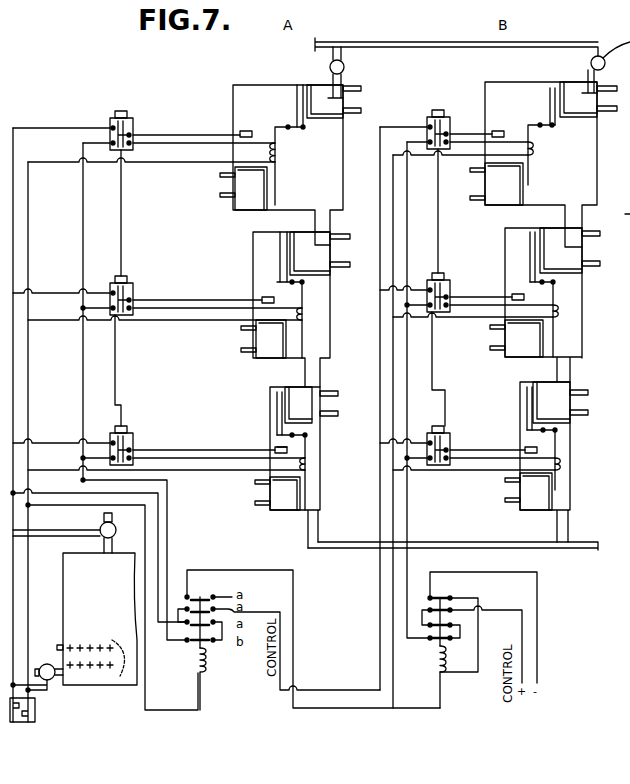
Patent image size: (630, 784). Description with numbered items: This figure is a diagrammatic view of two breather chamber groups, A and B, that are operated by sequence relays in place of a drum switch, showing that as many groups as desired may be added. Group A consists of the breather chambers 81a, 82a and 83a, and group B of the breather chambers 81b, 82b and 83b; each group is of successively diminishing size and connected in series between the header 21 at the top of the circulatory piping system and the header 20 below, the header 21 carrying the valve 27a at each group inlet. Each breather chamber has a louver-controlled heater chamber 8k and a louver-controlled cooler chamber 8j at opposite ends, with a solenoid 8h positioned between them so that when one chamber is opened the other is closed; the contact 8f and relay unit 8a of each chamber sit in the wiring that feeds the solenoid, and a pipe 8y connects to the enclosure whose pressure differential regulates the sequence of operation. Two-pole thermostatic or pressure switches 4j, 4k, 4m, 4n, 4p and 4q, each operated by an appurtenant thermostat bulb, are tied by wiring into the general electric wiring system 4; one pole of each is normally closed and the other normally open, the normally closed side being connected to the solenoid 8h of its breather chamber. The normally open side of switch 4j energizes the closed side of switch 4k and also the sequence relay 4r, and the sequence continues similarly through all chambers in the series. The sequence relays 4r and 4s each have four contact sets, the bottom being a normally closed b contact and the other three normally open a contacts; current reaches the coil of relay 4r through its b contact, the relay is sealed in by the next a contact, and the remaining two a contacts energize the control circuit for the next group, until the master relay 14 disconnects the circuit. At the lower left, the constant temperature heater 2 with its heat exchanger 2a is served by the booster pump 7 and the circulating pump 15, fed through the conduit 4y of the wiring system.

The header 21 is at (530, 46).
The valve 27a is at (329, 68).
The breather chamber 81a is at (229, 118).
The breather chamber 82a is at (247, 270).
The breather chamber 83a is at (268, 433).
The breather chamber 81b is at (468, 108).
The breather chamber 82b is at (504, 249).
The breather chamber 83b is at (505, 417).
The electric wiring system 4 is at (28, 262).
The thermostatic switch 4j is at (132, 137).
The thermostatic switch 4k is at (132, 293).
The thermostatic switch 4m is at (132, 451).
The thermostatic switch 4n is at (448, 134).
The thermostatic switch 4p is at (448, 305).
The thermostatic switch 4q is at (448, 451).
The sequence relay 4r is at (309, 640).
The sequence relay 4s is at (478, 605).
The conduit 4y is at (56, 523).
The relay unit 8a is at (252, 416).
The contact 8f is at (283, 129).
The solenoid 8h is at (279, 151).
The louver-controlled cooler chamber 8j is at (330, 268).
The louver-controlled heater chamber 8k is at (340, 118).
The pipe 8y is at (617, 214).
The header 20 is at (530, 548).
The circulating pump 15 is at (117, 533).
The booster pump 7 is at (45, 664).
The constant temperature heater 2 is at (63, 610).
The heat exchanger 2a is at (105, 685).
The master relay 14 is at (36, 713).